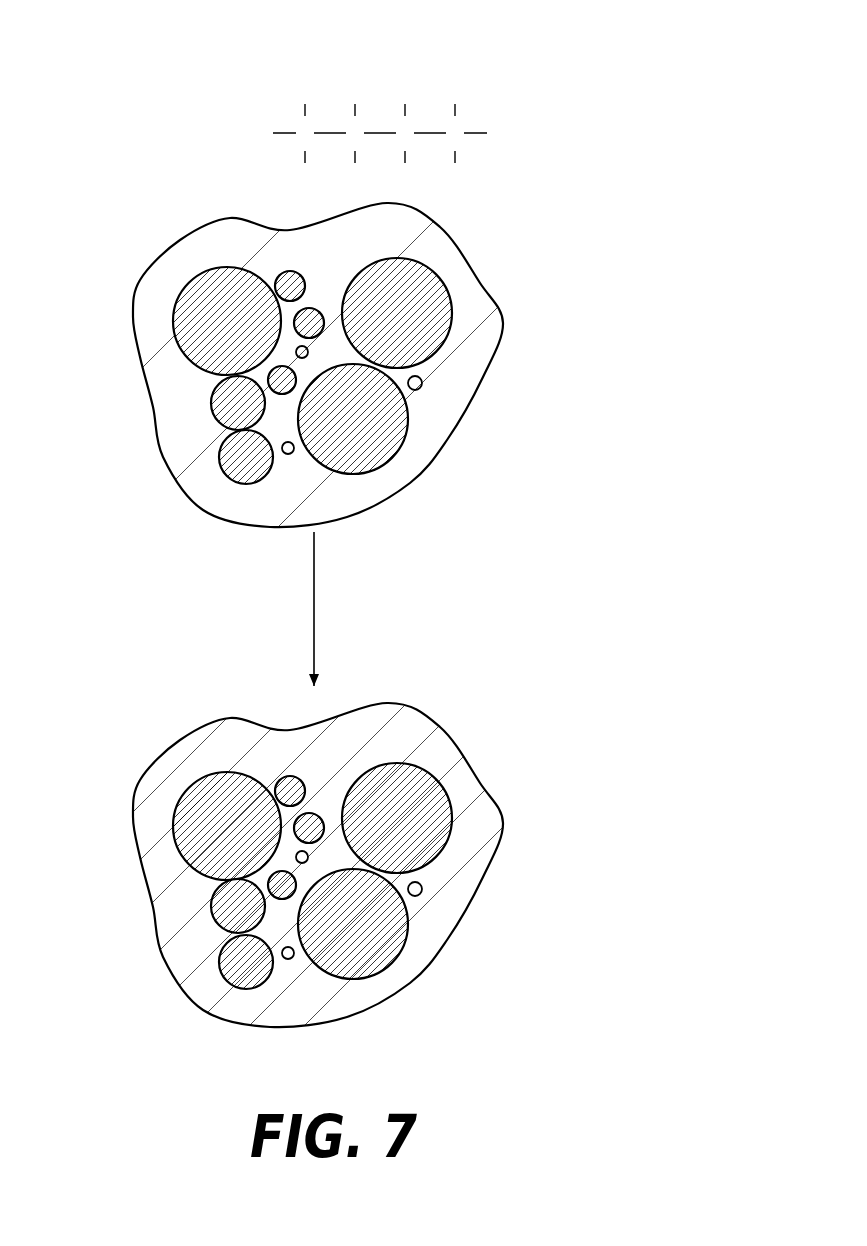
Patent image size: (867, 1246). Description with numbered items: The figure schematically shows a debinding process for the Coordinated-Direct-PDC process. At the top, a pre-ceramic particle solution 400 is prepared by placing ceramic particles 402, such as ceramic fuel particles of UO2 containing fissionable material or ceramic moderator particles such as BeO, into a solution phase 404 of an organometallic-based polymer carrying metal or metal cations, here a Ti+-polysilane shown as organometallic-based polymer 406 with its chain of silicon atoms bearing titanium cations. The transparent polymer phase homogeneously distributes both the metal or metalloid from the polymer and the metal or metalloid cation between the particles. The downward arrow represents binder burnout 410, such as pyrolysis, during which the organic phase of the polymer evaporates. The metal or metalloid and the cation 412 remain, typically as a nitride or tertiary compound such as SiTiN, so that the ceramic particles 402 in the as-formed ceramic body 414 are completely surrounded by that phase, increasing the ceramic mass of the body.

The pre-ceramic particle solution 400 is at (465, 451).
The ceramic particle 402 is at (222, 410).
The solution phase 404 is at (207, 477).
The organometallic-based polymer 406 is at (312, 48).
The binder burnout 410 is at (170, 592).
The metal or metalloid cation 412 is at (412, 731).
The as-formed ceramic body 414 is at (424, 1005).